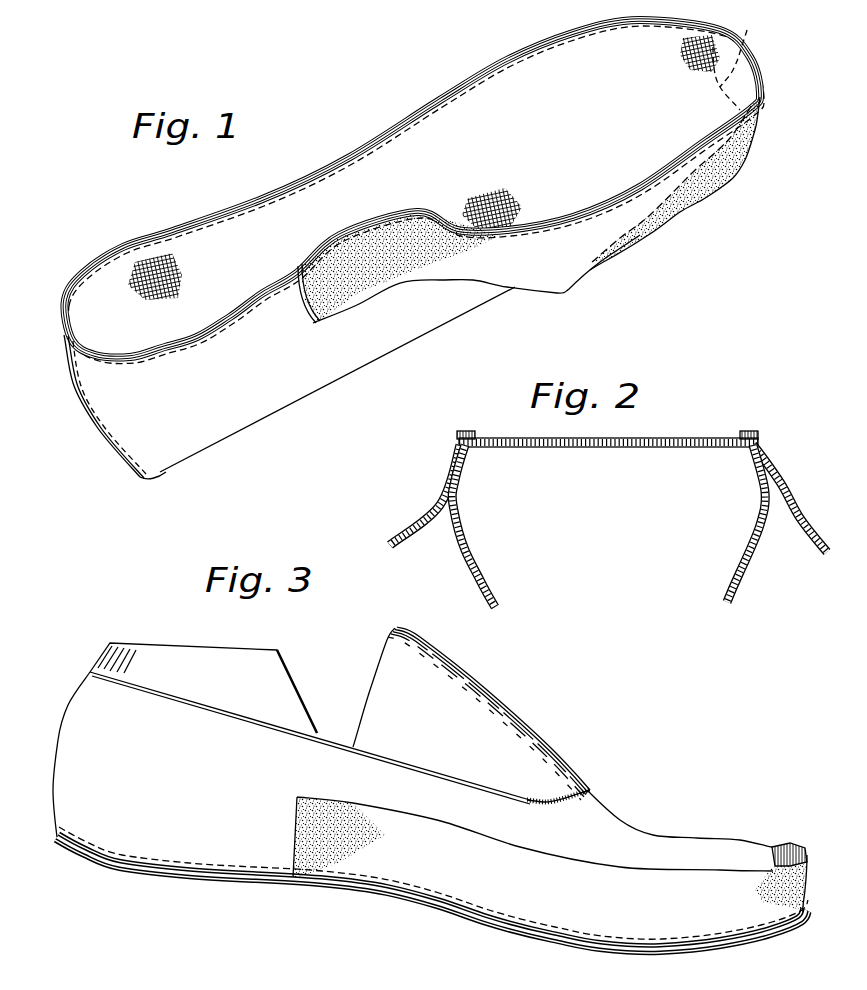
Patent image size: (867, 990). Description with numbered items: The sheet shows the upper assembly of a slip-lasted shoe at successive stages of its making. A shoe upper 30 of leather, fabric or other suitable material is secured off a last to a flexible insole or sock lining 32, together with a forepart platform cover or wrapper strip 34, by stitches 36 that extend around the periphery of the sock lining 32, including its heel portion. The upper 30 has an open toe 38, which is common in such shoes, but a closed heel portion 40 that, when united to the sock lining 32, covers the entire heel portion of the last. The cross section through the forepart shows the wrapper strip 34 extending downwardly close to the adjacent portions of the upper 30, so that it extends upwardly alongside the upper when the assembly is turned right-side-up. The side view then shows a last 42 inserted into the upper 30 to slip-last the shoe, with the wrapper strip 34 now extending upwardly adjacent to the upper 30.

In FIG. 1, the shoe upper 30 is at (410, 323).
In FIG. 2, the shoe upper 30 is at (736, 571).
In FIG. 3, the shoe upper 30 is at (612, 832).
In FIG. 1, the sock lining 32 is at (500, 105).
In FIG. 2, the sock lining 32 is at (690, 436).
In FIG. 1, the wrapper strip 34 is at (664, 216).
In FIG. 2, the wrapper strip 34 is at (424, 514).
In FIG. 3, the wrapper strip 34 is at (443, 835).
In FIG. 1, the stitches 36 is at (210, 233).
In FIG. 2, the stitches 36 is at (762, 441).
In FIG. 3, the stitches 36 is at (210, 857).
In FIG. 1, the open toe 38 is at (744, 42).
In FIG. 1, the closed heel portion 40 is at (123, 417).
In FIG. 3, the closed heel portion 40 is at (82, 736).
In FIG. 3, the last 42 is at (472, 718).